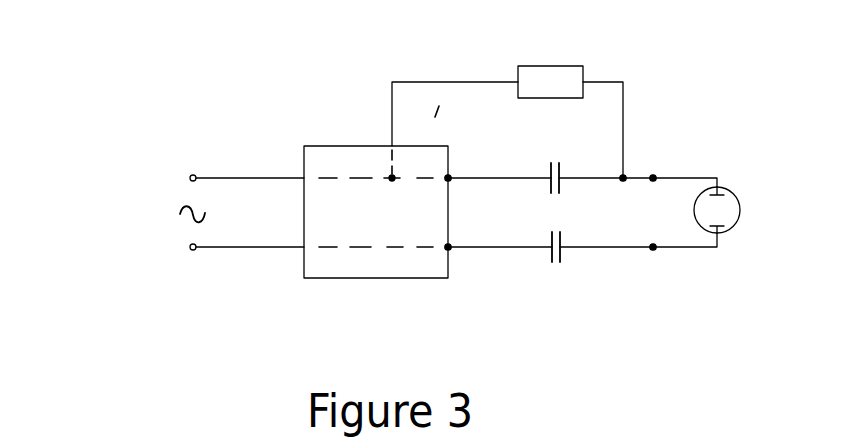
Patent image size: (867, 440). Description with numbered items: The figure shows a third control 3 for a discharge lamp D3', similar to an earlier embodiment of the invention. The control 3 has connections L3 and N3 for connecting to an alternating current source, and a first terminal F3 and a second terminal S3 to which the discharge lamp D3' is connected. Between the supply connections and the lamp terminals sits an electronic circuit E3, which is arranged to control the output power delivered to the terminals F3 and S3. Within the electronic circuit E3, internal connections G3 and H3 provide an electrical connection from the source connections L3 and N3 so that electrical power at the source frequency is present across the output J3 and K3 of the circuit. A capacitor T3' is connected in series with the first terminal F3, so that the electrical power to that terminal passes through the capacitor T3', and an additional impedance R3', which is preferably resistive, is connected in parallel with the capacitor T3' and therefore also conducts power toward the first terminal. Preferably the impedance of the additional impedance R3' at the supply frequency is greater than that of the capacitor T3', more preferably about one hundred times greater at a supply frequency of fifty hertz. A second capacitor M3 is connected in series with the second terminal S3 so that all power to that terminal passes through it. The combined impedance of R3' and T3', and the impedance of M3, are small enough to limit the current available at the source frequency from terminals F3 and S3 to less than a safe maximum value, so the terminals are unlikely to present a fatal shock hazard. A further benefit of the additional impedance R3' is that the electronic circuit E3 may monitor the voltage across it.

The control 3 is at (267, 147).
The connection L3 is at (188, 176).
The connection N3 is at (190, 249).
The internal connection G3 is at (354, 177).
The internal connection H3 is at (328, 249).
The electronic circuit E3 is at (388, 278).
The output J3 is at (451, 178).
The output K3 is at (452, 253).
The additional impedance R3' is at (583, 105).
The capacitor T3' is at (587, 155).
The second capacitor M3 is at (562, 252).
The first terminal F3 is at (655, 175).
The second terminal S3 is at (657, 251).
The discharge lamp D3' is at (754, 193).